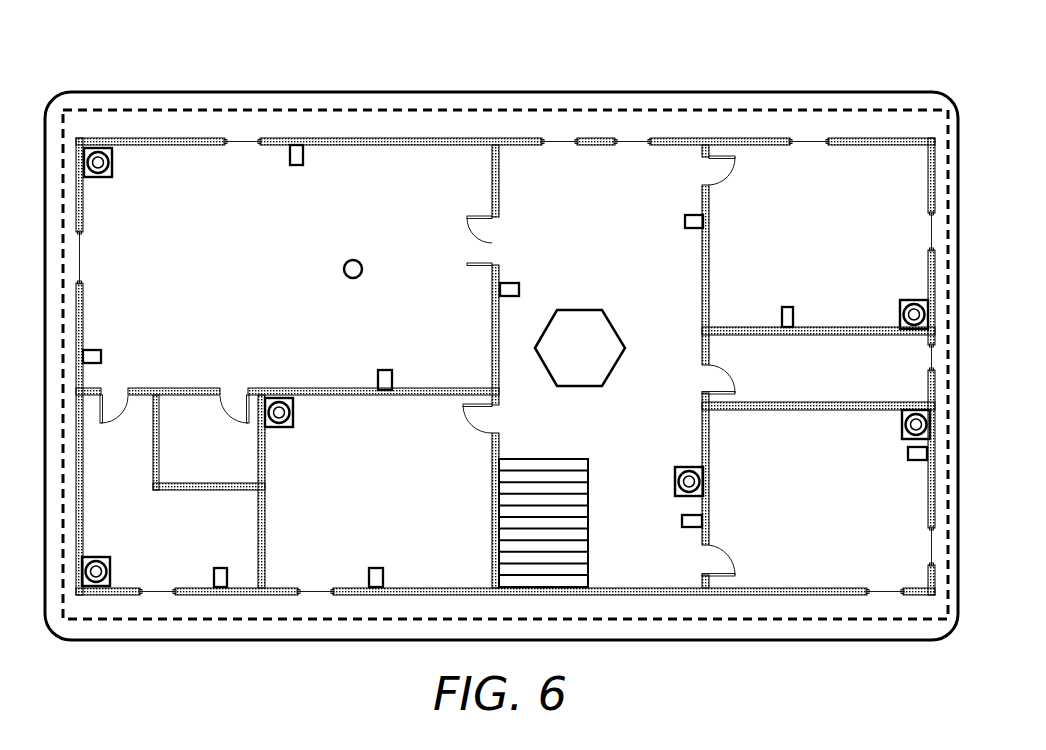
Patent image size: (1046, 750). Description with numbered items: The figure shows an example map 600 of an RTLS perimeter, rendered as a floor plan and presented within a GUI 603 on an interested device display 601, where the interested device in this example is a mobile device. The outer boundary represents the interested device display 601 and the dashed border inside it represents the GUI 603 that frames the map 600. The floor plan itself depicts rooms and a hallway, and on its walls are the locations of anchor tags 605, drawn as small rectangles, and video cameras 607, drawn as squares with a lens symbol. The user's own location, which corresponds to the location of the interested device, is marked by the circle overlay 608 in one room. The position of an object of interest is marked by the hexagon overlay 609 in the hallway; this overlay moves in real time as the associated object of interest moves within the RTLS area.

The map 600 is at (760, 138).
The interested device display 601 is at (665, 92).
The GUI 603 is at (715, 110).
The anchor tags 605 is at (304, 153).
The video cameras 607 is at (112, 166).
The circle overlay 608 is at (363, 262).
The hexagon overlay 609 is at (608, 328).